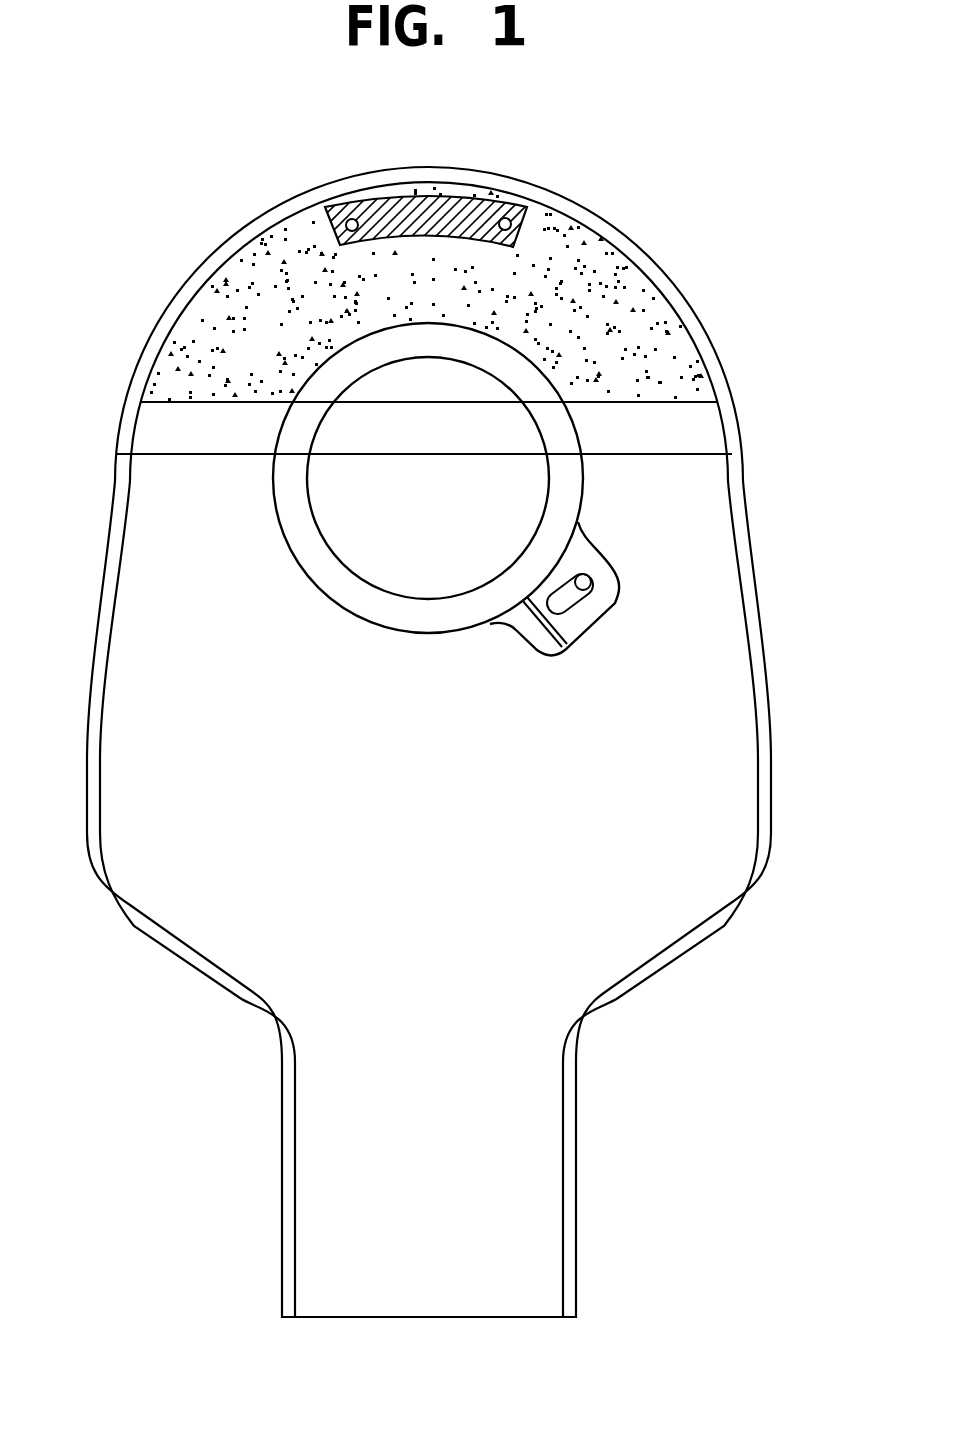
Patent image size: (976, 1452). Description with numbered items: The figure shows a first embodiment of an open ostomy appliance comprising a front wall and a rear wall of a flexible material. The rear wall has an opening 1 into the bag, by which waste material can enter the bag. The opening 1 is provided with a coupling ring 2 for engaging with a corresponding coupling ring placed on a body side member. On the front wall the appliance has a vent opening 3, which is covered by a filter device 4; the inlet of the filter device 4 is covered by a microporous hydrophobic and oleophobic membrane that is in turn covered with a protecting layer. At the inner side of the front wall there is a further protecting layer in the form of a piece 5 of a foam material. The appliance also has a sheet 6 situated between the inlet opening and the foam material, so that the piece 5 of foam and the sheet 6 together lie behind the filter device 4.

The opening 1 is at (372, 558).
The coupling ring 2 is at (568, 498).
The vent opening 3 is at (353, 219).
The filter device 4 is at (472, 205).
The piece of a foam material 5 is at (585, 260).
The sheet 6 is at (168, 435).